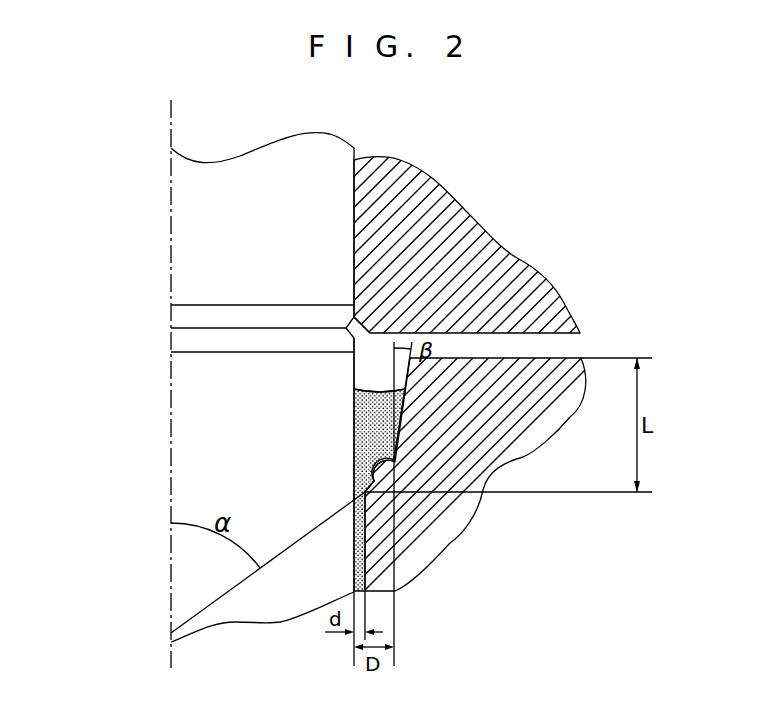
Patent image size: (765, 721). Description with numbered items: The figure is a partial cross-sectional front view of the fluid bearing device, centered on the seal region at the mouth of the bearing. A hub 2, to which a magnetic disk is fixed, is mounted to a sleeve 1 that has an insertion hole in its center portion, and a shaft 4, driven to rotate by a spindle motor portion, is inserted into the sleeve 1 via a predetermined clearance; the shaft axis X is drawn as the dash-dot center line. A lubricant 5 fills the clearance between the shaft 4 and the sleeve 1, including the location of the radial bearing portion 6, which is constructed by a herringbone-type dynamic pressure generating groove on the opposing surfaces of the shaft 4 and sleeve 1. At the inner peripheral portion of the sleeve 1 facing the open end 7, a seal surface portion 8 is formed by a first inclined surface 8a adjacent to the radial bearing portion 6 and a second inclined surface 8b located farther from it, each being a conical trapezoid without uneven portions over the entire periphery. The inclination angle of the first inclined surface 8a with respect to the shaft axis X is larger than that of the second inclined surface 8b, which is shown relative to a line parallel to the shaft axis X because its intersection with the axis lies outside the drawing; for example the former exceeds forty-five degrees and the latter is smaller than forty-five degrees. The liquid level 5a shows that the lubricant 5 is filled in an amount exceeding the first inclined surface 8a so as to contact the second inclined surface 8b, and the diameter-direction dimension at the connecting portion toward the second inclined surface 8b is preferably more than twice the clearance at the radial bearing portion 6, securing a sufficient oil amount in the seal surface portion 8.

The sleeve 1 is at (423, 548).
The hub 2 is at (468, 260).
The shaft 4 is at (257, 186).
The lubricant 5 is at (370, 410).
The liquid level 5a is at (366, 389).
The radial bearing portion 6 is at (350, 542).
The open end 7 is at (377, 362).
The seal surface portion 8 is at (488, 480).
The first inclined surface 8a is at (372, 462).
The second inclined surface 8b is at (397, 400).
The shaft axis X is at (167, 260).